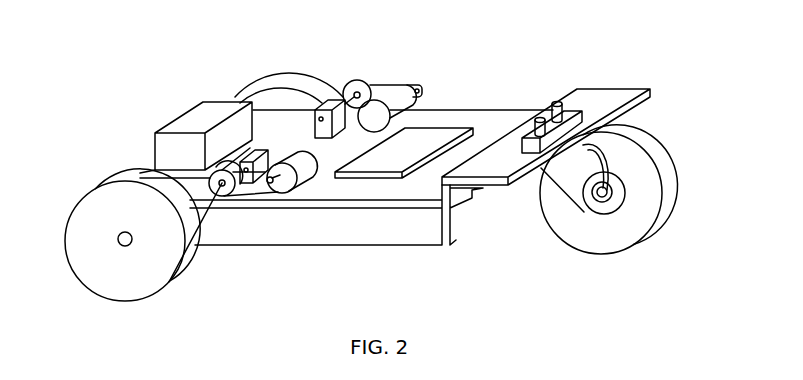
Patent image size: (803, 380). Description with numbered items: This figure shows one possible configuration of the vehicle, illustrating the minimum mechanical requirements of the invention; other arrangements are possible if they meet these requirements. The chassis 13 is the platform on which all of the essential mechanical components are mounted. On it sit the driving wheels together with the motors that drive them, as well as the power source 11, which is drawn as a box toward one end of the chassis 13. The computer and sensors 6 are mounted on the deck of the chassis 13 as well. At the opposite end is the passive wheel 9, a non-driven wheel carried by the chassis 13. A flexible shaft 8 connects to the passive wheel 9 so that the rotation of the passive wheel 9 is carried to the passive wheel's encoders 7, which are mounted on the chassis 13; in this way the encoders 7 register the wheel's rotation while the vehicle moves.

The computer and sensors 6 is at (413, 150).
The passive wheel's encoders 7 is at (582, 110).
The flexible shaft 8 is at (618, 158).
The passive wheel 9 is at (663, 220).
The power source 11 is at (190, 110).
The chassis 13 is at (400, 250).